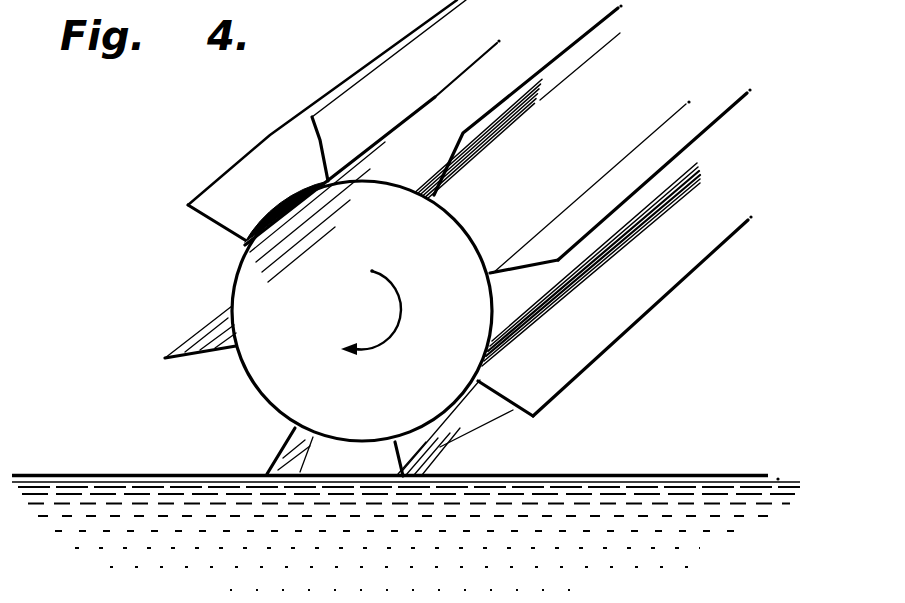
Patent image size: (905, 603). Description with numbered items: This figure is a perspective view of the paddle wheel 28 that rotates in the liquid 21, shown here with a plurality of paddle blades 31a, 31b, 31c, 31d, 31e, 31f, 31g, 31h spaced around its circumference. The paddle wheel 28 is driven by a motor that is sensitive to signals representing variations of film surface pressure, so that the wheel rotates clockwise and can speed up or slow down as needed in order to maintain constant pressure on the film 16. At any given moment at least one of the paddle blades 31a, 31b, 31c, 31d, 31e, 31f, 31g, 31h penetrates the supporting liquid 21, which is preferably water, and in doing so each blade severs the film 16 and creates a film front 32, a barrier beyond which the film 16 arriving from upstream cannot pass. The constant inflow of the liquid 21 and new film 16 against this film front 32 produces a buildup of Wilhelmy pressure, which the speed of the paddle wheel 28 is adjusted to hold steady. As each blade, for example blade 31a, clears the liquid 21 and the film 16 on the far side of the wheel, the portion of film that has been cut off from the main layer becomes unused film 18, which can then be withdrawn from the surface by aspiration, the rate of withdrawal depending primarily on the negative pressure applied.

The film 16 is at (409, 493).
The unused film 18 is at (163, 468).
The liquid 21 is at (666, 477).
The paddle wheel 28 is at (352, 390).
The film front 32 is at (518, 437).
The paddle blade 31a is at (647, 278).
The paddle blade 31b is at (622, 158).
The paddle blade 31c is at (576, 61).
The paddle blade 31d is at (410, 63).
The paddle blade 31e is at (257, 180).
The paddle blade 31f is at (203, 330).
The paddle blade 31g is at (302, 472).
The paddle blade 31h is at (427, 443).